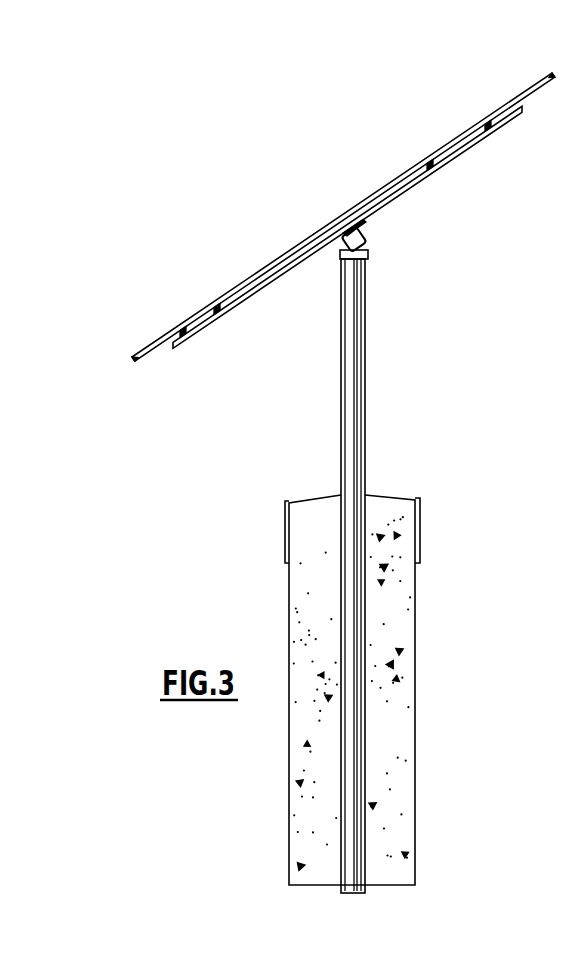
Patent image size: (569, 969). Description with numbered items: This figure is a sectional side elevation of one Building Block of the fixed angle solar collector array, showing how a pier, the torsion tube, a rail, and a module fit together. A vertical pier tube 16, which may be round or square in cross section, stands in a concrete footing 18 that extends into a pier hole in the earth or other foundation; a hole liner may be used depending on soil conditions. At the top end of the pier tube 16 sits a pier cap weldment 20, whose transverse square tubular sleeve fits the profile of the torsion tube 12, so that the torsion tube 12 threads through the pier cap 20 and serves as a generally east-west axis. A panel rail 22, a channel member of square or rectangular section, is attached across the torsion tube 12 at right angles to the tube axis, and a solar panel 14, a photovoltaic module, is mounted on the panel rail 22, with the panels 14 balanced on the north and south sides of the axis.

The torsion tube 12 is at (367, 241).
The solar panel 14 is at (420, 162).
The pier tube 16 is at (366, 427).
The concrete footing 18 is at (402, 582).
The pier cap weldment 20 is at (367, 266).
The panel rail 22 is at (456, 157).